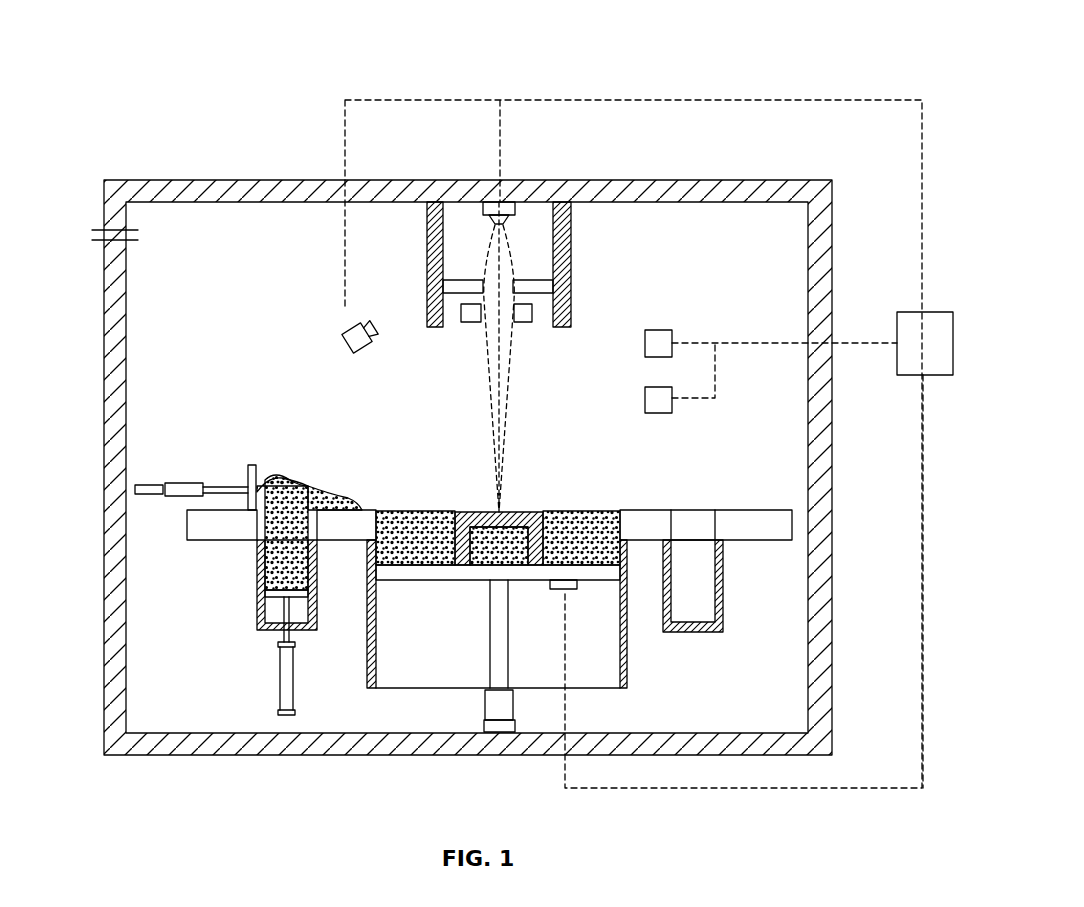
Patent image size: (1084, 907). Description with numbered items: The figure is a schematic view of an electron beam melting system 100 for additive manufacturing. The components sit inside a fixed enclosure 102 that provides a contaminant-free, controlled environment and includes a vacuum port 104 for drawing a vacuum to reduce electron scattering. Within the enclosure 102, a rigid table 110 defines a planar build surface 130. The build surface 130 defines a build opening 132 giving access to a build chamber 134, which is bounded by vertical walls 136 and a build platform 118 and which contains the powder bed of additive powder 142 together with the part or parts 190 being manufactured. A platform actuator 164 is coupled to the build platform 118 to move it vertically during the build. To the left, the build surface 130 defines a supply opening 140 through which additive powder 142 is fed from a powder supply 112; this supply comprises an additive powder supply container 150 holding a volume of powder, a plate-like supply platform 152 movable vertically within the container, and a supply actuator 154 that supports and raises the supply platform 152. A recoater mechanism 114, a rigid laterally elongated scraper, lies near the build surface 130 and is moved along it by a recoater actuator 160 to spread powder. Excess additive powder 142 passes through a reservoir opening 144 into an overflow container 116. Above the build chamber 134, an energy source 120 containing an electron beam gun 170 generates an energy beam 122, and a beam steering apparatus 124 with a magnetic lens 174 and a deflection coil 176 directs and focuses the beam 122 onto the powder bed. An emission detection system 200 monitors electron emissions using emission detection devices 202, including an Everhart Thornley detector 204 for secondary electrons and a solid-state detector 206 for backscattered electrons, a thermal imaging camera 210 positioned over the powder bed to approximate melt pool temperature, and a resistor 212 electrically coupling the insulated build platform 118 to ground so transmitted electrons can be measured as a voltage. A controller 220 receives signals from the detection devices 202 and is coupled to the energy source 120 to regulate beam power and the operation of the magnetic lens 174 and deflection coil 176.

The electron beam melting system 100 is at (94, 279).
The enclosure 102 is at (298, 203).
The vacuum port 104 is at (138, 236).
The table 110 is at (738, 538).
The powder supply 112 is at (253, 596).
The recoater mechanism 114 is at (252, 465).
The overflow container 116 is at (668, 611).
The build platform 118 is at (384, 571).
The energy source 120 is at (410, 244).
The energy beam 122 is at (490, 375).
The beam steering apparatus 124 is at (543, 300).
The planar build surface 130 is at (738, 508).
The build opening 132 is at (603, 522).
The build chamber 134 is at (617, 654).
The vertical walls 136 is at (367, 668).
The supply opening 140 is at (303, 500).
The additive powder 142 is at (290, 488).
The reservoir opening 144 is at (715, 522).
The additive powder supply container 150 is at (316, 575).
The supply platform 152 is at (298, 596).
The supply actuator 154 is at (281, 680).
The recoater actuator 160 is at (185, 484).
The platform actuator 164 is at (488, 709).
The electron beam gun 170 is at (494, 202).
The magnetic lens 174 is at (540, 300).
The deflection coil 176 is at (522, 323).
The parts 190 is at (462, 570).
The emission detection system 200 is at (845, 97).
The emission detection device 202 is at (645, 343).
The Everhart Thornley detector 204 is at (657, 330).
The solid-state detector 206 is at (672, 412).
The thermal imaging camera 210 is at (345, 348).
The resistor 212 is at (567, 590).
The controller 220 is at (907, 357).